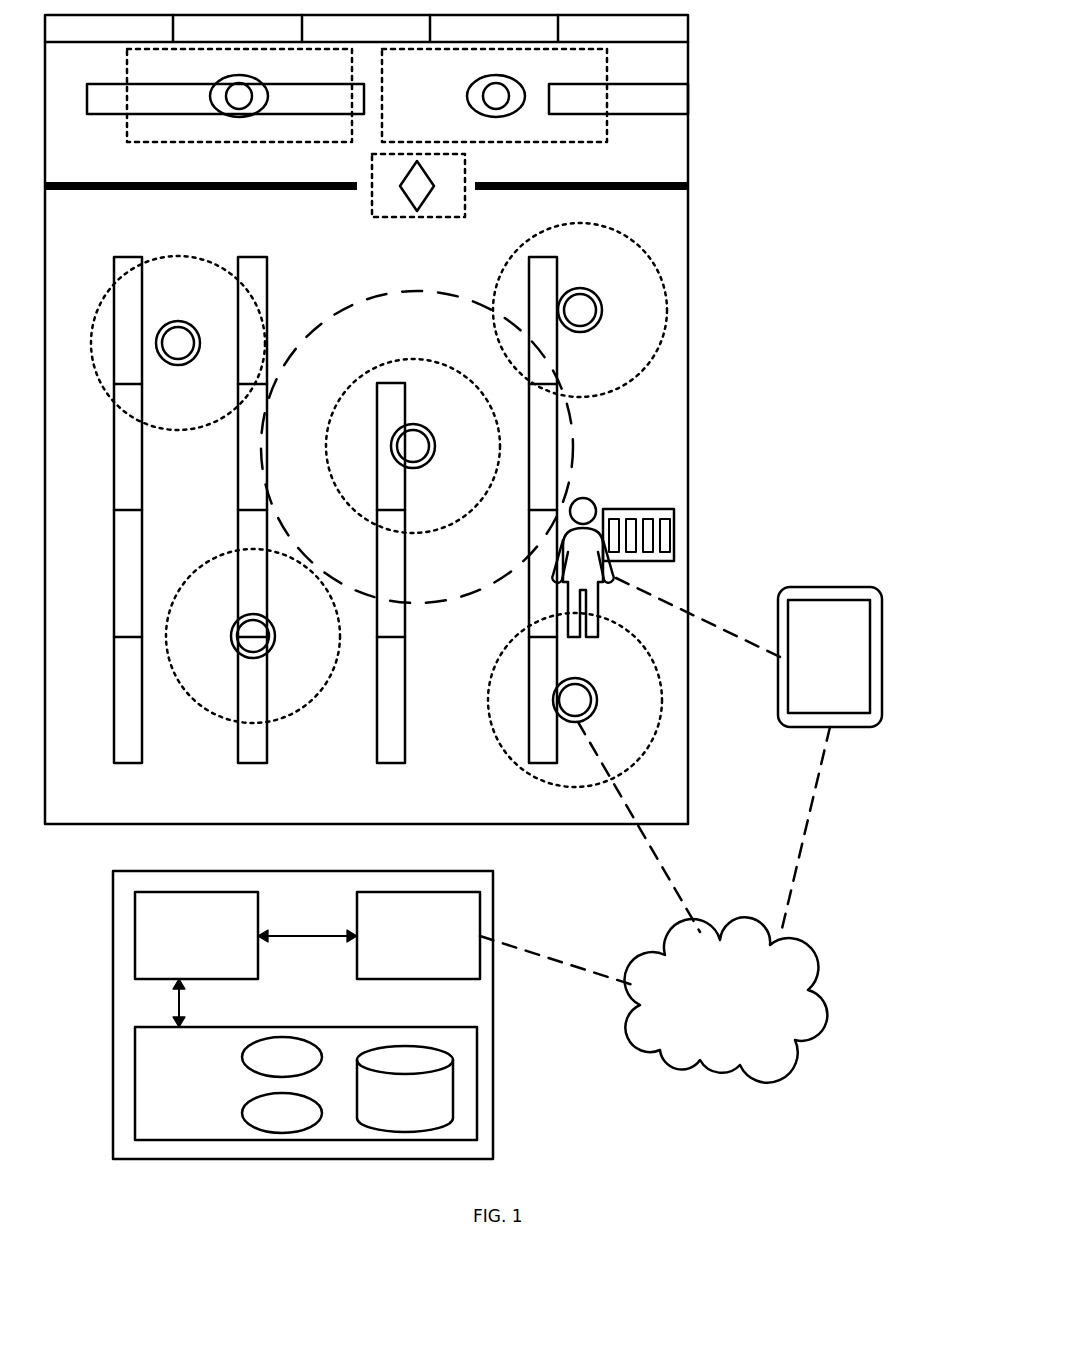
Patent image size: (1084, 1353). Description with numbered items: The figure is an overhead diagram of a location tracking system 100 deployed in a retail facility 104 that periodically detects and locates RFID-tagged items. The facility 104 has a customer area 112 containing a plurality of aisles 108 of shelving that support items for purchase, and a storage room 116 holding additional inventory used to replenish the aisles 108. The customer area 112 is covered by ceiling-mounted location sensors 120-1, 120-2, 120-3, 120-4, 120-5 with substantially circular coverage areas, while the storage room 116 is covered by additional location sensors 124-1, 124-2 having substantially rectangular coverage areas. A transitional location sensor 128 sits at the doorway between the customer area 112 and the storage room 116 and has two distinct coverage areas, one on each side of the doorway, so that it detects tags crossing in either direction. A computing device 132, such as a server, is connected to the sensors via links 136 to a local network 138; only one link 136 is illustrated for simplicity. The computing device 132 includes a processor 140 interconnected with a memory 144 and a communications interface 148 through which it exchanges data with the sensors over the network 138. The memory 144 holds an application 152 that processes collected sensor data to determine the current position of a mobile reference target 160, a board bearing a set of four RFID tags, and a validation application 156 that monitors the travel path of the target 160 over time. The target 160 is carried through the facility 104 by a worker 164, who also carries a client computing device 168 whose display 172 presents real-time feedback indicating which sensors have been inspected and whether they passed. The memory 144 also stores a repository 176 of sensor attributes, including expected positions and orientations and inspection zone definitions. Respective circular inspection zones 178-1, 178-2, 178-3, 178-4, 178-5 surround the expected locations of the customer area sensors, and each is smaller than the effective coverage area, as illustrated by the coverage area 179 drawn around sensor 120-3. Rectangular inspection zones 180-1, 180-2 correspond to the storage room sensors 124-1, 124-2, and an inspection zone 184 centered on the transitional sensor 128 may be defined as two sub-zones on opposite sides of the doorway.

The location tracking system 100 is at (826, 200).
The retail facility 104 is at (698, 303).
The aisles 108 is at (128, 763).
The customer area 112 is at (423, 558).
The storage room 116 is at (672, 164).
The location sensor 120-1 is at (178, 321).
The location sensor 120-2 is at (580, 289).
The location sensor 120-3 is at (413, 424).
The location sensor 120-4 is at (252, 658).
The location sensor 120-5 is at (597, 707).
The location sensor 124-1 is at (210, 96).
The location sensor 124-2 is at (502, 114).
The transitional location sensor 128 is at (405, 195).
The computing device 132 is at (374, 1015).
The links 136 is at (690, 915).
The local network 138 is at (726, 999).
The processor 140 is at (196, 935).
The memory 144 is at (306, 1083).
The communications interface 148 is at (418, 935).
The application 152 is at (282, 1057).
The validation application 156 is at (282, 1113).
The mobile reference target 160 is at (675, 518).
The worker 164 is at (597, 503).
The client computing device 168 is at (869, 611).
The display 172 is at (850, 678).
The repository 176 is at (405, 1089).
The inspection zone 178-1 is at (108, 298).
The inspection zone 178-2 is at (620, 388).
The inspection zone 178-3 is at (372, 370).
The inspection zone 178-4 is at (202, 563).
The inspection zone 178-5 is at (500, 755).
The coverage area 179 is at (445, 604).
The inspection zone 180-1 is at (240, 142).
The inspection zone 180-2 is at (607, 68).
The inspection zone 184 is at (440, 217).